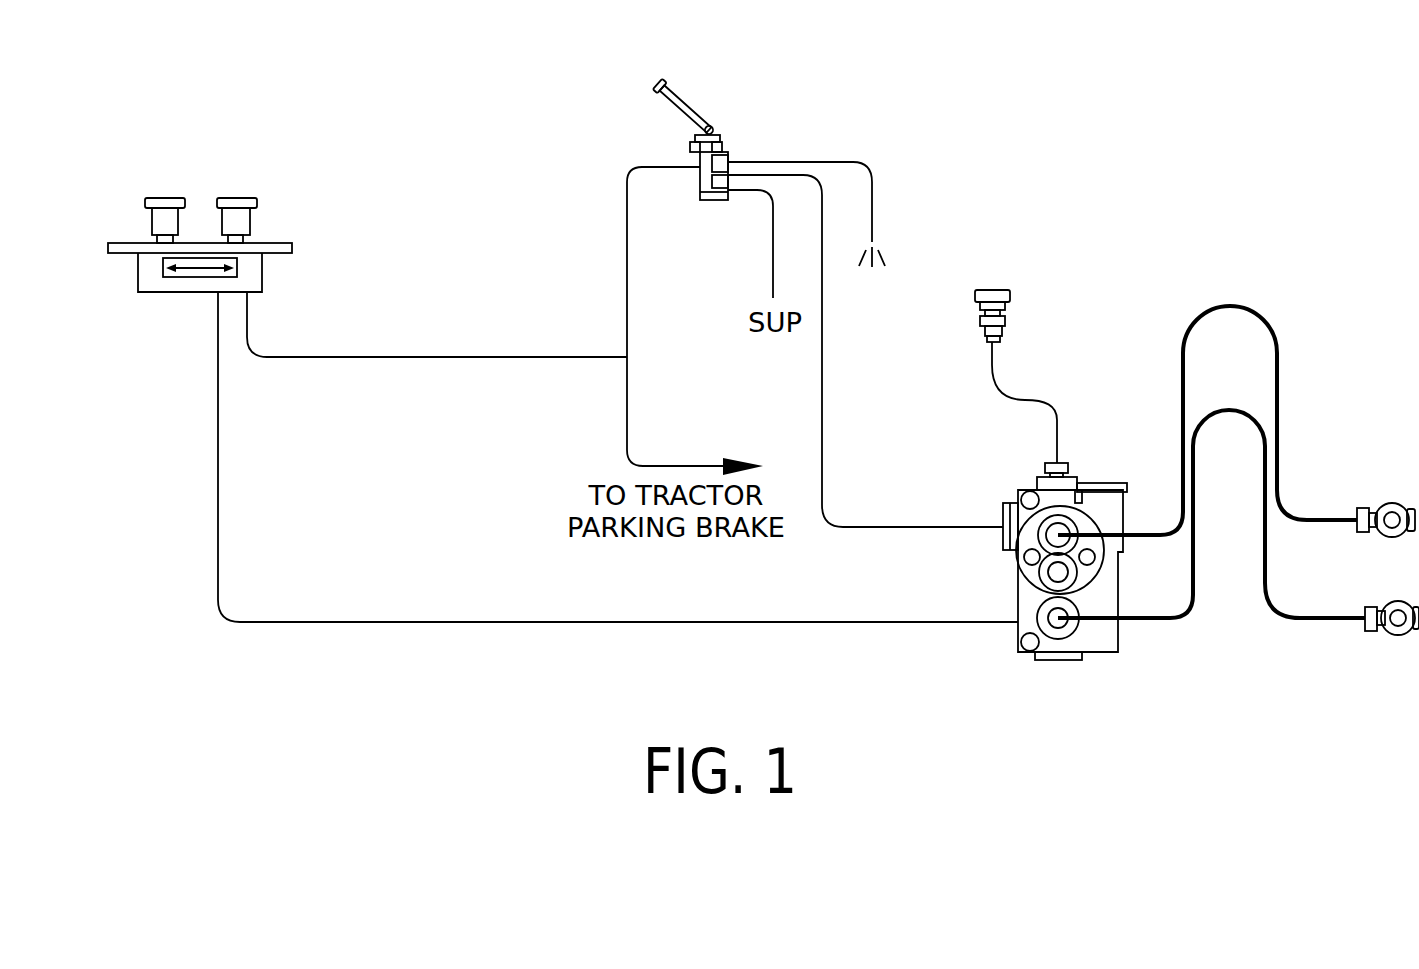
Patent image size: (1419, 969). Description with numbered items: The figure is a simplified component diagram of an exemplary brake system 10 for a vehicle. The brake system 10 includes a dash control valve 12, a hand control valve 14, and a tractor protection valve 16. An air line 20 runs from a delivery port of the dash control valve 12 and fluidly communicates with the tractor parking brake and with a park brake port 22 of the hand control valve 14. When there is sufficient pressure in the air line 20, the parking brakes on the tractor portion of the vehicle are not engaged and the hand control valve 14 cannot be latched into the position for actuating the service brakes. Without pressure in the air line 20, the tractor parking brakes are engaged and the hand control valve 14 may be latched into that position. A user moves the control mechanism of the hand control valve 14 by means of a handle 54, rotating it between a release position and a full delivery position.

The brake system 10 is at (480, 168).
The dash control valve 12 is at (200, 196).
The hand control valve 14 is at (709, 114).
The tractor protection valve 16 is at (1079, 528).
The air line 20 is at (455, 360).
The park brake port 22 is at (697, 138).
The handle 54 is at (685, 102).